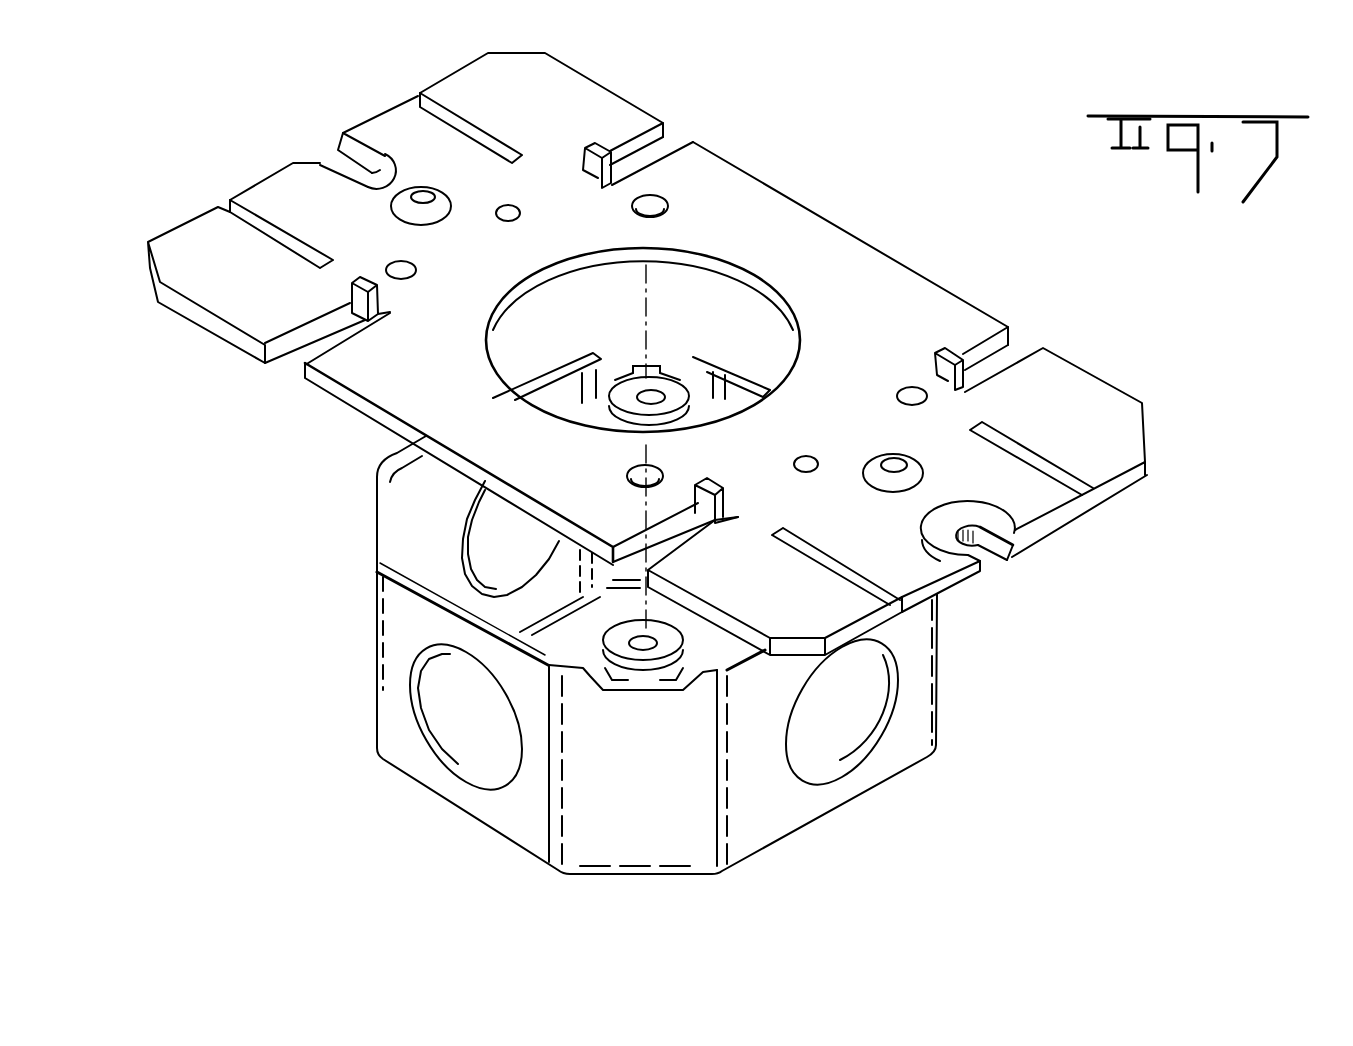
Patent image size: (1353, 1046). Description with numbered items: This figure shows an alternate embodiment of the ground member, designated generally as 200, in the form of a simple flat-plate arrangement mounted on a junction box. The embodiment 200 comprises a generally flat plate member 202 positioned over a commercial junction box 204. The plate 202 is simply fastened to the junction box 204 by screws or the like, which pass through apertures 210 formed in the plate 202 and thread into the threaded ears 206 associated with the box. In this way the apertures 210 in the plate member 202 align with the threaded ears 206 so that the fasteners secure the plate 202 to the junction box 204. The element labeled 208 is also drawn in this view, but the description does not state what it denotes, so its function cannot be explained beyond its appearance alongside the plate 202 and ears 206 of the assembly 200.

The alternate embodiment of the ground member 200 is at (850, 160).
The plate member 202 is at (927, 308).
The commercial junction box 204 is at (910, 721).
The threaded ears 206 is at (620, 653).
The upper mounting bracket 208 is at (653, 382).
The apertures 210 is at (663, 197).